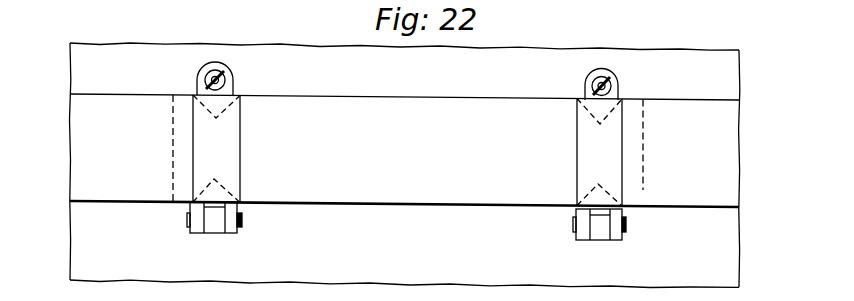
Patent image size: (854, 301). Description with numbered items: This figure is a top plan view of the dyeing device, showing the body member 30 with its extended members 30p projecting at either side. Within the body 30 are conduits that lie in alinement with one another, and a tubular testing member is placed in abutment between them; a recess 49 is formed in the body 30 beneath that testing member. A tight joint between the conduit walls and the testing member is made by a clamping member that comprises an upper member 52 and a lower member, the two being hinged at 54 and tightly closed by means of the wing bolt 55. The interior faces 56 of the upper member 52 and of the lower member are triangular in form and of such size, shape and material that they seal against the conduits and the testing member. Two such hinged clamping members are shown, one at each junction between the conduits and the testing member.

The body member 30 is at (405, 165).
The extended member 30p is at (97, 157).
The recess 49 is at (647, 181).
The upper member 52 is at (228, 152).
The hinge 54 is at (243, 222).
The wing bolt 55 is at (223, 78).
The interior faces 56 is at (222, 104).